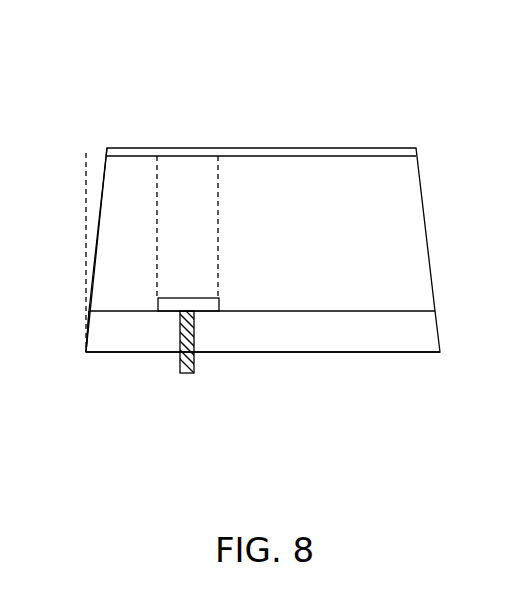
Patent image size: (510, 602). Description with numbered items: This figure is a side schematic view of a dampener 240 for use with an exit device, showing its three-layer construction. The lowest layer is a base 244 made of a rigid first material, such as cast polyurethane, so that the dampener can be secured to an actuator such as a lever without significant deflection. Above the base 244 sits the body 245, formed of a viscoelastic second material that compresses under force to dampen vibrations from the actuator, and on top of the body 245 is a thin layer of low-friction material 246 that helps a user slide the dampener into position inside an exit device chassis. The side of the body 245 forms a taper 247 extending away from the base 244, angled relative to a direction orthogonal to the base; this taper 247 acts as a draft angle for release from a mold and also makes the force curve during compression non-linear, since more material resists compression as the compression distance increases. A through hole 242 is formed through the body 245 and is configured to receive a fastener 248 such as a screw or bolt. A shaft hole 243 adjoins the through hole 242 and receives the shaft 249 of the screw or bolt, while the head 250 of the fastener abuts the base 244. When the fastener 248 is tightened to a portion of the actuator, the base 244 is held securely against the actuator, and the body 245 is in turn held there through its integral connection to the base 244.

The dampener 240 is at (390, 113).
The through hole 242 is at (187, 163).
The shaft hole 243 is at (180, 330).
The base 244 is at (332, 338).
The body 245 is at (364, 247).
The low-friction material 246 is at (302, 150).
The taper 247 is at (97, 247).
The fastener 248 is at (210, 330).
The shaft 249 is at (187, 374).
The head 250 is at (187, 298).